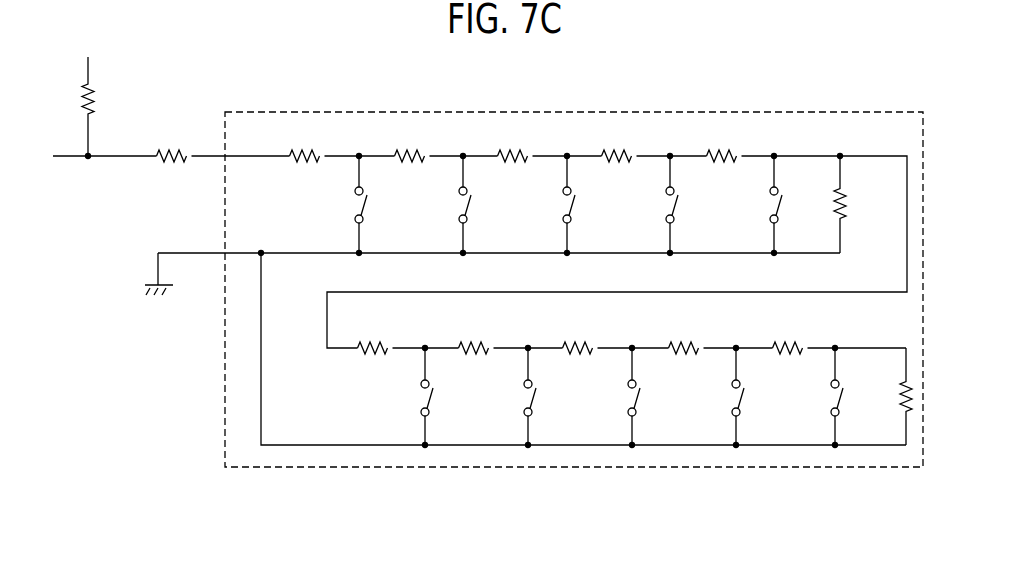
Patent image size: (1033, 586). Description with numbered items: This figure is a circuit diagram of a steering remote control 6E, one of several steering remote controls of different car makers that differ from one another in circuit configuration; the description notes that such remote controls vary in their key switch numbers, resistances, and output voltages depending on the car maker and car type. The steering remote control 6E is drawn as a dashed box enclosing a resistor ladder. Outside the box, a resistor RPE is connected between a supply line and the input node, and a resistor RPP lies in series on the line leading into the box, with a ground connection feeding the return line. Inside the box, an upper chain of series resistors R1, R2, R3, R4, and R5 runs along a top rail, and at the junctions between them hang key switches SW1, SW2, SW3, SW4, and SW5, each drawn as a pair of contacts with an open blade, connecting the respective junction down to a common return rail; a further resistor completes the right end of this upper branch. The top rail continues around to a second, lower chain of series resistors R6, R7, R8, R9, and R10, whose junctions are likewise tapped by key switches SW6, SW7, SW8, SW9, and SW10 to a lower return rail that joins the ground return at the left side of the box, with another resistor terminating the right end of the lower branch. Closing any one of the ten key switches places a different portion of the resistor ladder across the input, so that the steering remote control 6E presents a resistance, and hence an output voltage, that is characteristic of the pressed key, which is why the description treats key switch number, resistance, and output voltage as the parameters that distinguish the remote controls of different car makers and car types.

The steering remote control 6E is at (765, 112).
The pull-up/external resistor RPE is at (106, 106).
The series resistor RPP is at (172, 143).
The resistor R1 is at (305, 143).
The resistor R2 is at (410, 143).
The resistor R3 is at (513, 143).
The resistor R4 is at (617, 143).
The resistor R5 is at (722, 143).
The resistor R6 is at (373, 334).
The resistor R7 is at (474, 334).
The resistor R8 is at (578, 334).
The resistor R9 is at (684, 334).
The resistor R10 is at (790, 334).
The switch SW1 is at (384, 205).
The switch SW2 is at (488, 205).
The switch SW3 is at (592, 205).
The switch SW4 is at (695, 205).
The switch SW5 is at (799, 205).
The switch SW6 is at (450, 397).
The switch SW7 is at (553, 397).
The switch SW8 is at (657, 397).
The switch SW9 is at (761, 397).
The switch SW10 is at (864, 397).